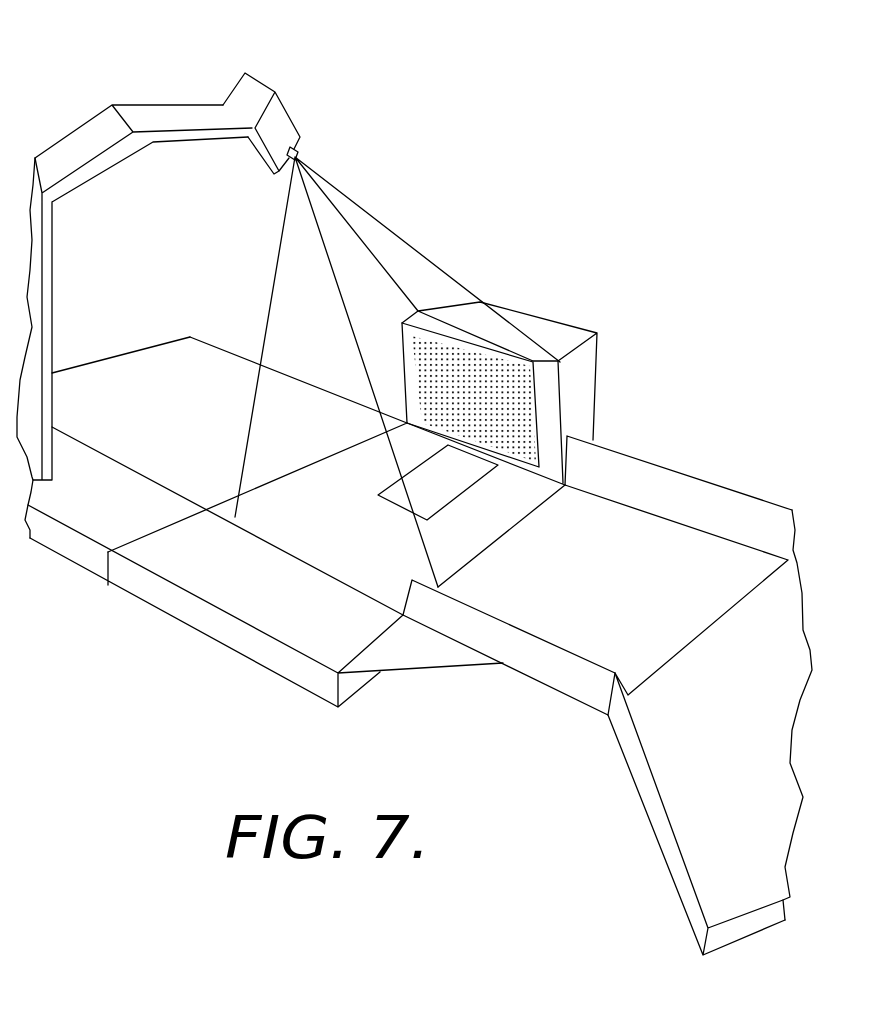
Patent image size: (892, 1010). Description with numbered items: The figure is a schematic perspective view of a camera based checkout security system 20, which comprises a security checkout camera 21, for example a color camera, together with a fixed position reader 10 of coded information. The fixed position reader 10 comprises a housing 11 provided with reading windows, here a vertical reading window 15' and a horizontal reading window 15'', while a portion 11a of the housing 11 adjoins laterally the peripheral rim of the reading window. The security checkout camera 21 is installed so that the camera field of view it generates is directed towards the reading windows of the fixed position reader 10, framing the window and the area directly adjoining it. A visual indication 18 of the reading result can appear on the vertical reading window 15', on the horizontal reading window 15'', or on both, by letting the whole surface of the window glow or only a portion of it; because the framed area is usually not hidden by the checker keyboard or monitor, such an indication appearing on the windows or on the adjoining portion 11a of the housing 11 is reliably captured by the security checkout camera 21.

The fixed position reader of coded information 10 is at (668, 397).
The housing 11 is at (535, 320).
The portion of the housing 11a is at (387, 543).
The vertical reading window 15' is at (605, 376).
The horizontal reading window 15'' is at (550, 477).
The visual indication of the reading result 18 is at (477, 403).
The camera based checkout security system 20 is at (422, 100).
The security checkout camera 21 is at (245, 89).